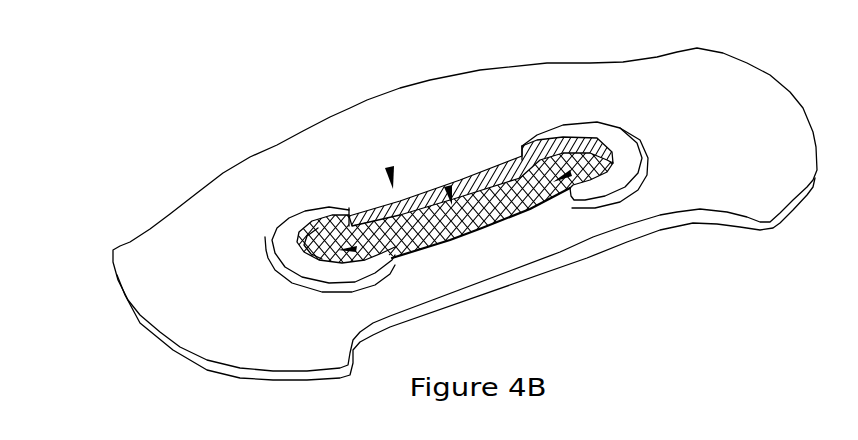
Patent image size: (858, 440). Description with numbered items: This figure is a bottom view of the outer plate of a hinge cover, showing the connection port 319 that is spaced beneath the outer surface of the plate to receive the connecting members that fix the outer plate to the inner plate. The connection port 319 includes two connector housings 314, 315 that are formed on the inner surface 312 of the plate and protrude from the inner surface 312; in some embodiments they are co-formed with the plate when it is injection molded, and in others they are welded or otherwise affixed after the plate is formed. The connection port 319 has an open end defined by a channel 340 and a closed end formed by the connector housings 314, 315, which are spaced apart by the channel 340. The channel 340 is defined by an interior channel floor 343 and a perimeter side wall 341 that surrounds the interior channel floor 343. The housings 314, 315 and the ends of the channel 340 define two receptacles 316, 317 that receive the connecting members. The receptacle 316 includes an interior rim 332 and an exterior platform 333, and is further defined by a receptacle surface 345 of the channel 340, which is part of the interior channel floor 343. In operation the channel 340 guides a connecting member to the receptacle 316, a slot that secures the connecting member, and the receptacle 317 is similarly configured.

The inner surface 312 is at (737, 102).
The connector housing 314 is at (285, 228).
The connector housing 315 is at (556, 128).
The receptacle 316 is at (400, 236).
The receptacle 317 is at (520, 214).
The connection port 319 is at (390, 168).
The interior rim 332 is at (357, 222).
The exterior platform 333 is at (293, 255).
The channel 340 is at (448, 186).
The perimeter side wall 341 is at (475, 185).
The interior channel floor 343 is at (470, 208).
The receptacle surface 345 is at (311, 247).